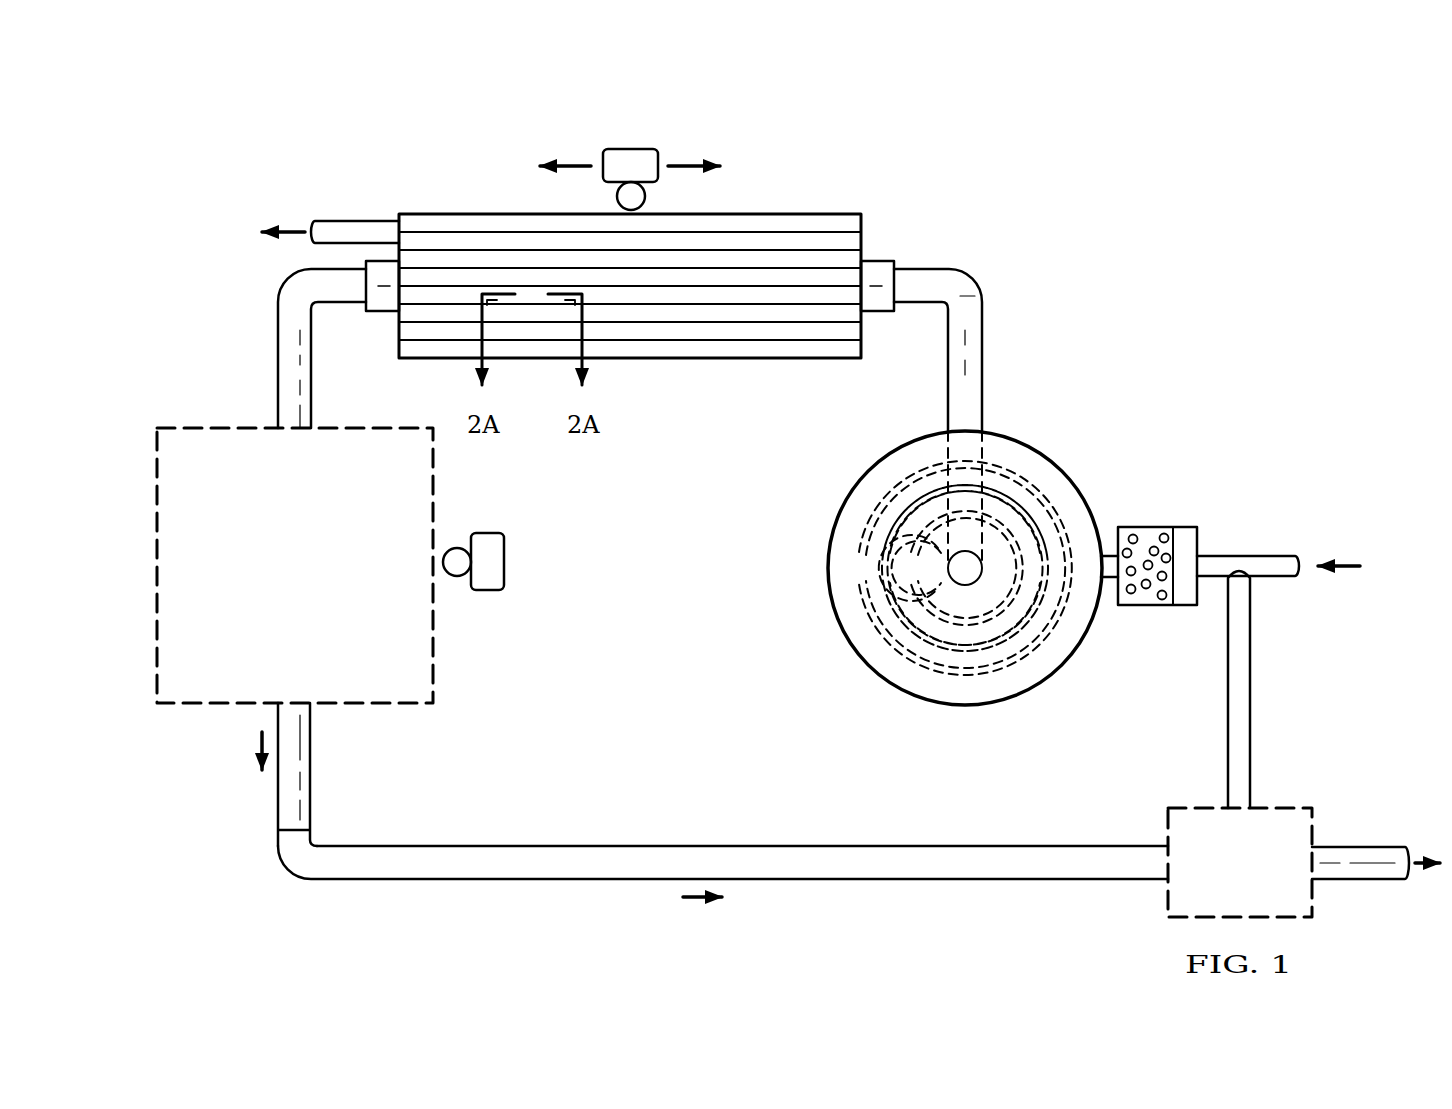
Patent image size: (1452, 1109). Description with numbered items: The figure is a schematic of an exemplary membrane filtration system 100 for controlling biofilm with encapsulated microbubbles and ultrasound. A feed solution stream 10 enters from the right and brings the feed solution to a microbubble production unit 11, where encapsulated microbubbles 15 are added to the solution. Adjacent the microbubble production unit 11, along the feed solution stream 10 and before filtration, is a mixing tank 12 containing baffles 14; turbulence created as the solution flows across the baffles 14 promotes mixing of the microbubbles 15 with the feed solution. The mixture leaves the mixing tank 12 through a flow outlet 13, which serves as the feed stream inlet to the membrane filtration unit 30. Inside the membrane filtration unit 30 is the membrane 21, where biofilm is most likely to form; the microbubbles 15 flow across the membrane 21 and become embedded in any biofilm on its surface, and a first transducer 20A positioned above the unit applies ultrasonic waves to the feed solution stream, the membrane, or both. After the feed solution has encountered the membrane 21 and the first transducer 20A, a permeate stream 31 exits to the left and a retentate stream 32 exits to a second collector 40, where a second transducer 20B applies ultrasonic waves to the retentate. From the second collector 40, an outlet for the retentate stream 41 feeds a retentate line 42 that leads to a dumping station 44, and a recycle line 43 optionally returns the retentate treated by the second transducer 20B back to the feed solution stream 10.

The membrane filtration system 100 is at (426, 132).
The feed solution stream 10 is at (1340, 565).
The microbubble production unit 11 is at (1160, 527).
The mixing tank 12 is at (1062, 462).
The flow outlet 13 is at (984, 330).
The baffles 14 is at (850, 596).
The encapsulated microbubbles 15 is at (1147, 590).
The first transducer 20A is at (631, 156).
The second transducer 20B is at (494, 562).
The membrane 21 is at (458, 250).
The membrane filtration unit 30 is at (788, 208).
The permeate stream 31 is at (282, 230).
The retentate stream 32 is at (278, 325).
The second collector 40 is at (156, 580).
The outlet for the retentate stream 41 is at (278, 797).
The retentate line 42 is at (600, 880).
The recycle line 43 is at (1252, 690).
The dumping station 44 is at (1313, 886).